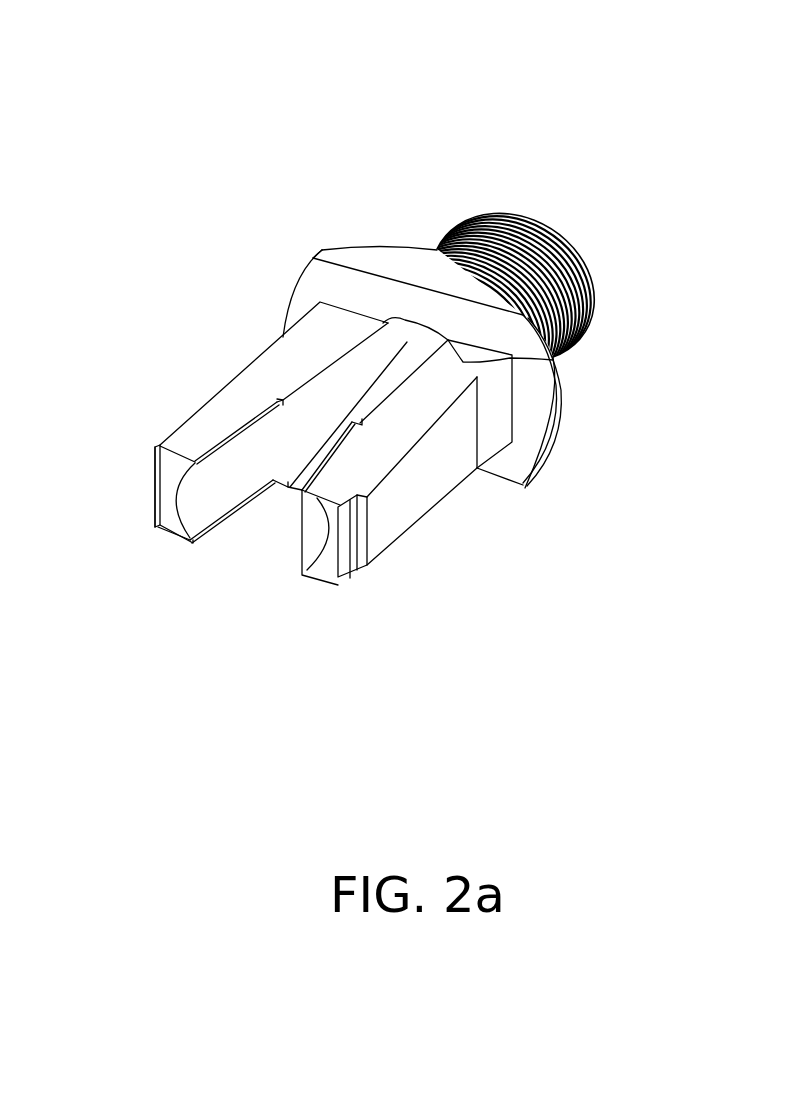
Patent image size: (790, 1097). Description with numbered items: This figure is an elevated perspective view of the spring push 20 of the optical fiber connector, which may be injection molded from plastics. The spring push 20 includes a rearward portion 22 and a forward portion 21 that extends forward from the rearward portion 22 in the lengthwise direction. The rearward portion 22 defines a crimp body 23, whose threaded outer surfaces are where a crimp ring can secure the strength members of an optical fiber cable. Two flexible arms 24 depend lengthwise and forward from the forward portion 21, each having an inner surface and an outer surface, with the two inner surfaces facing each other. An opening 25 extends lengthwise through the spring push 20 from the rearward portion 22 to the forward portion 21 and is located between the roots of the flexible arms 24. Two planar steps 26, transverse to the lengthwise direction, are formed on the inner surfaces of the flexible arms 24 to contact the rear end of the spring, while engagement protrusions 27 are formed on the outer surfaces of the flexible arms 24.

The spring push 20 is at (286, 150).
The forward portion 21 is at (323, 250).
The rearward portion 22 is at (575, 252).
The crimp body 23 is at (480, 217).
The flexible arm 24 is at (203, 428).
The opening 25 is at (407, 342).
The step 26 is at (267, 457).
The engagement protrusion 27 is at (155, 487).